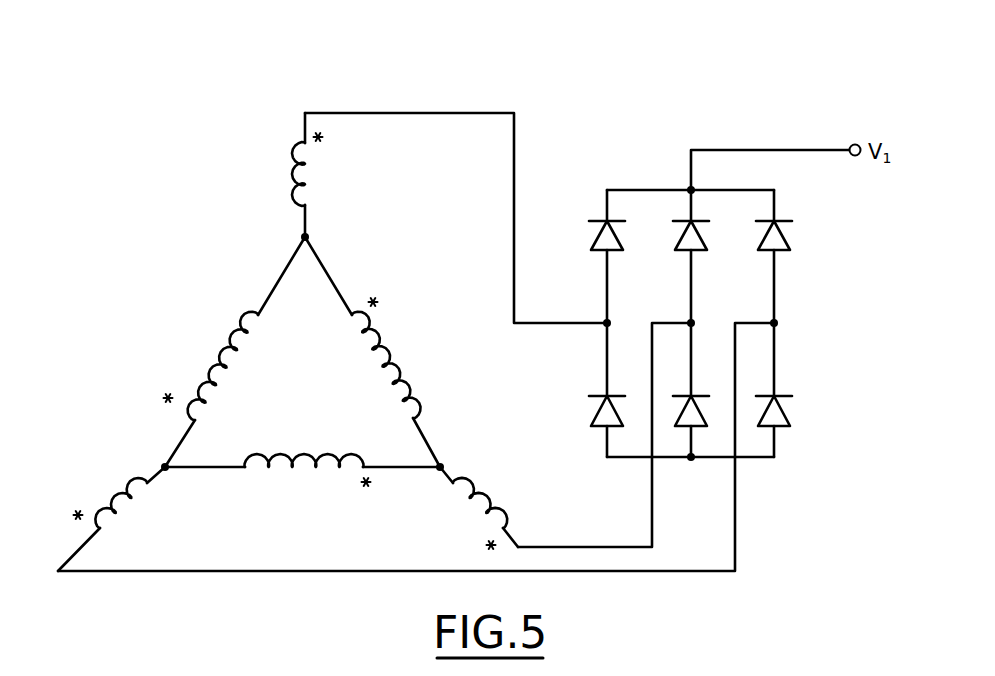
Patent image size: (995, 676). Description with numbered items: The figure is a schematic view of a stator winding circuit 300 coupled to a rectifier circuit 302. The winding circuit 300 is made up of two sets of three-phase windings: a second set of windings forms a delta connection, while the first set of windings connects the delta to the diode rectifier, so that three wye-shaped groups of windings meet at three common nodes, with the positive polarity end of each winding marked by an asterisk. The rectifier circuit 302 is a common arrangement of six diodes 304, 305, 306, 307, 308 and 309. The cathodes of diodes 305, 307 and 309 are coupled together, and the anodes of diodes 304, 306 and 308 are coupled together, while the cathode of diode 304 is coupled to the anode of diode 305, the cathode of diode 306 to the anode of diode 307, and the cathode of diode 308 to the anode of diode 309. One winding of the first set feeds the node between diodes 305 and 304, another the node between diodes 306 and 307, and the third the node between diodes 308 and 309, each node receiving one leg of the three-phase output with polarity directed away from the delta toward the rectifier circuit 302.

The stator circuit 300 is at (197, 80).
The rectifier circuit 302 is at (608, 141).
The diode 304 is at (592, 420).
The diode 305 is at (597, 238).
The diode 306 is at (683, 415).
The diode 307 is at (703, 240).
The diode 308 is at (784, 422).
The diode 309 is at (787, 243).